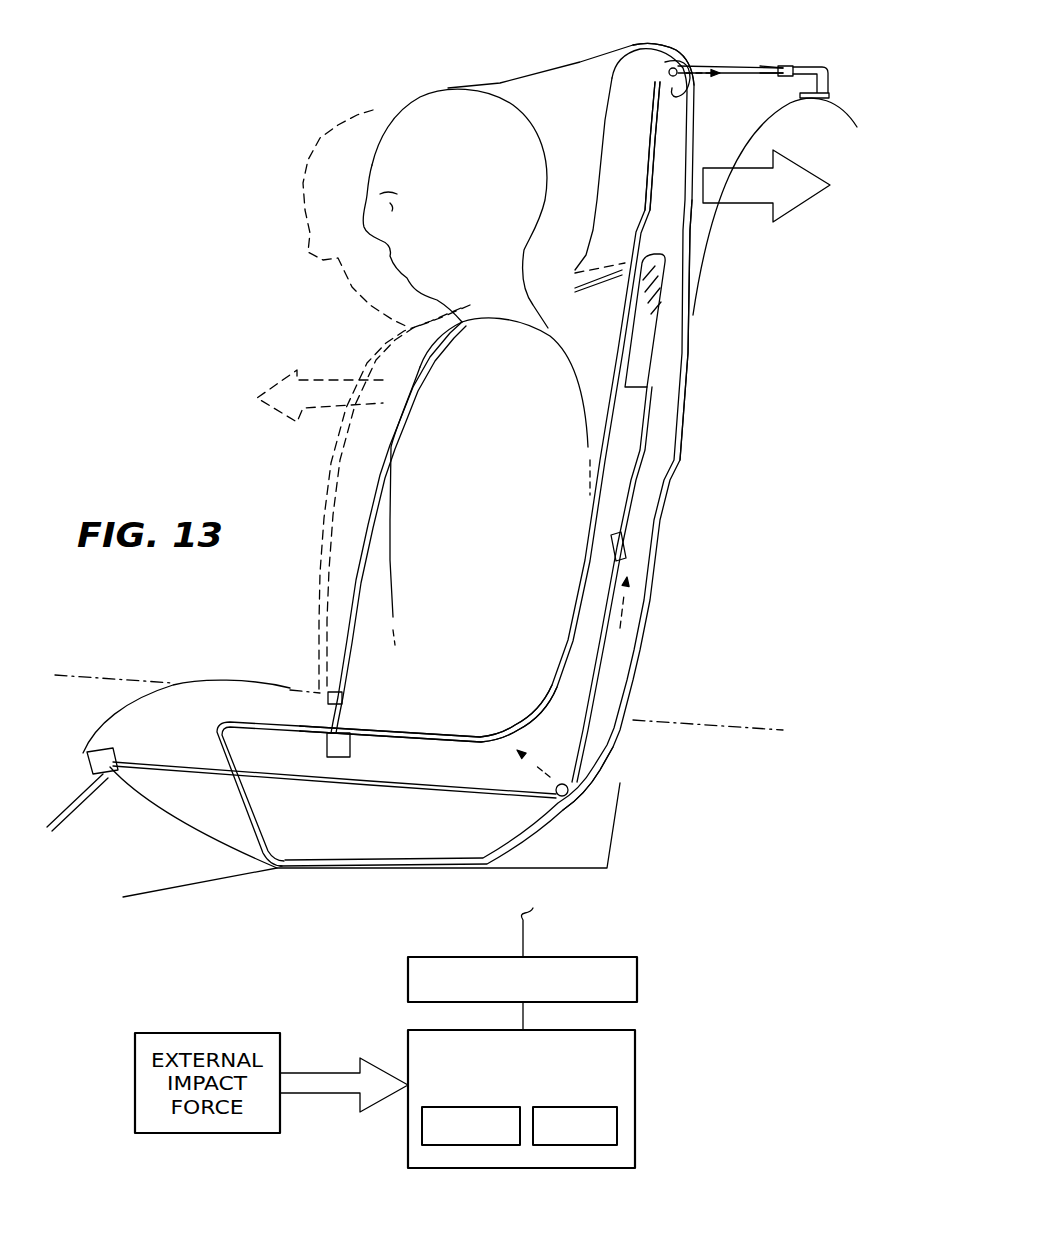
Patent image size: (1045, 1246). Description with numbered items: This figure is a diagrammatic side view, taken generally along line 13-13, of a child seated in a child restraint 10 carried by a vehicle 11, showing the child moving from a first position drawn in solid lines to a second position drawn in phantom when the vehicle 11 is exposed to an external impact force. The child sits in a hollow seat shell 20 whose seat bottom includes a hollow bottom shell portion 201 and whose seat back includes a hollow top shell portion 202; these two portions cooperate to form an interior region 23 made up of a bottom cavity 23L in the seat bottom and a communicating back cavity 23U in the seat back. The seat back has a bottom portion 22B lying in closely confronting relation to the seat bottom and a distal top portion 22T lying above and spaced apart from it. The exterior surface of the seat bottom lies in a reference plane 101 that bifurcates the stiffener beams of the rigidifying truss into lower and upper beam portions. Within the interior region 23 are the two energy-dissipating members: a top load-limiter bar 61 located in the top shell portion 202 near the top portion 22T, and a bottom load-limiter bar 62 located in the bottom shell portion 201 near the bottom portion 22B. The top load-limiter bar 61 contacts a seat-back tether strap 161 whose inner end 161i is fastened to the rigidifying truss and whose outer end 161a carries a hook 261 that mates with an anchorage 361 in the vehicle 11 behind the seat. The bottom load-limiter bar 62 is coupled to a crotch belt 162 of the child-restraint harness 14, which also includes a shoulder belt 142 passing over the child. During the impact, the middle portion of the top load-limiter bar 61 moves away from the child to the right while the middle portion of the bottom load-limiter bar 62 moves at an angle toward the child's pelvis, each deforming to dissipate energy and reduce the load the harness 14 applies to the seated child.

The child restraint 10 is at (720, 503).
The vehicle 11 is at (635, 1087).
The line 13- 13 is at (640, 978).
The child-restraint harness 14 is at (653, 421).
The hollow seat shell 20 is at (648, 674).
The top portion of seat back 22T is at (694, 49).
The bottom portion of seat back 22B is at (614, 767).
The interior region 23 is at (652, 516).
The back cavity 23U is at (665, 136).
The bottom cavity 23L is at (447, 765).
The top load-limiter bar 61 is at (677, 77).
The bottom load-limiter bar 62 is at (562, 780).
The reference plane 101 is at (63, 677).
The shoulder belt 142 is at (322, 470).
The seat-back tether strap 161 is at (733, 63).
The outer end of seat-back tether strap 161a is at (767, 65).
The inner end of seat-back tether strap 161i is at (663, 91).
The crotch belt 162 is at (400, 801).
The bottom shell portion 201 is at (152, 826).
The top shell portion 202 is at (692, 347).
The hook 261 is at (800, 73).
The anchorage 361 is at (820, 83).